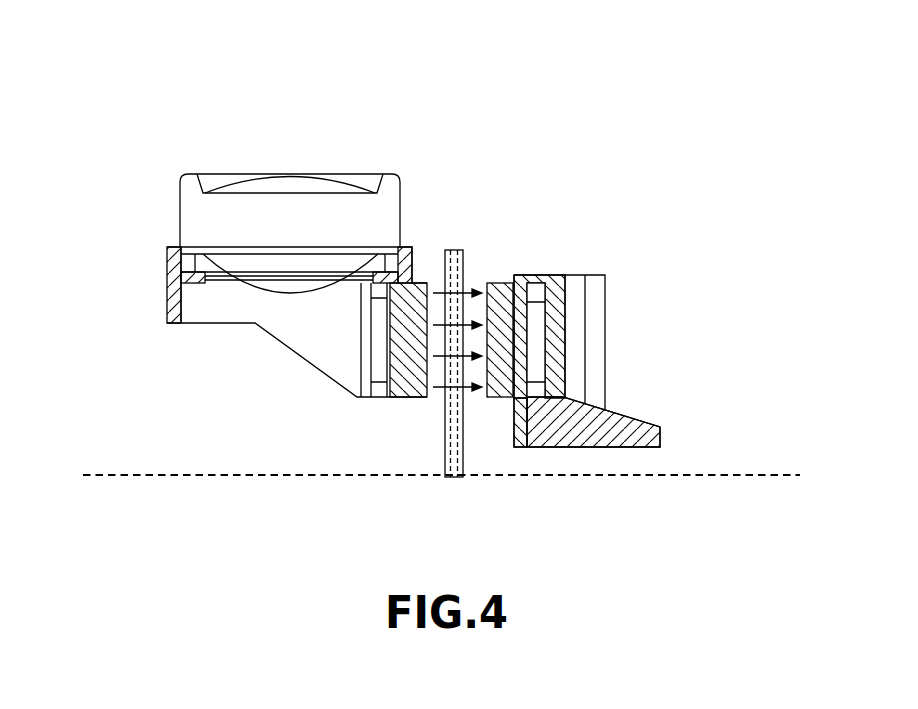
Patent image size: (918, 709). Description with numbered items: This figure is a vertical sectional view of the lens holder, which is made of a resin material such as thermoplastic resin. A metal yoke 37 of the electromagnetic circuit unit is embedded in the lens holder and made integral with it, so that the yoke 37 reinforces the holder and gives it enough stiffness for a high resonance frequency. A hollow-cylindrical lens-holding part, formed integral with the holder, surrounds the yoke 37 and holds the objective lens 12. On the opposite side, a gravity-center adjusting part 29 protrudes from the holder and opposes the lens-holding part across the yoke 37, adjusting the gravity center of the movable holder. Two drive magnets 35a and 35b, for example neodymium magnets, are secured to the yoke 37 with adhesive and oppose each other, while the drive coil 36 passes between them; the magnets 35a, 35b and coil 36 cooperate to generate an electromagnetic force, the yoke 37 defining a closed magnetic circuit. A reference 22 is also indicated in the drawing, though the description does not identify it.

The objective lens 12 is at (293, 198).
The housing body 22 is at (550, 277).
The gravity-center adjusting part 29 is at (622, 418).
The drive magnet 35a is at (414, 300).
The drive magnet 35b is at (500, 302).
The drive coil 36 is at (450, 437).
The yoke 37 is at (533, 283).